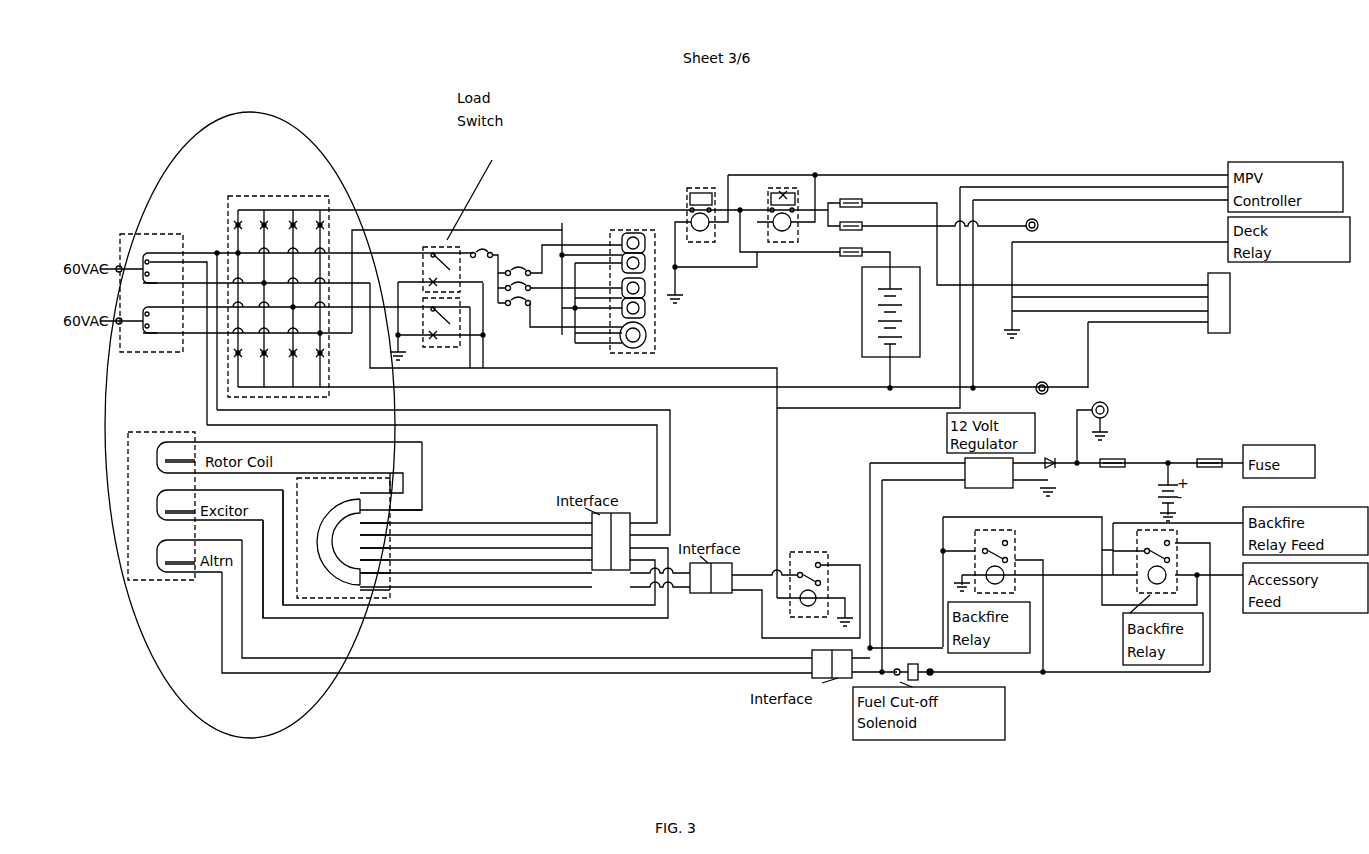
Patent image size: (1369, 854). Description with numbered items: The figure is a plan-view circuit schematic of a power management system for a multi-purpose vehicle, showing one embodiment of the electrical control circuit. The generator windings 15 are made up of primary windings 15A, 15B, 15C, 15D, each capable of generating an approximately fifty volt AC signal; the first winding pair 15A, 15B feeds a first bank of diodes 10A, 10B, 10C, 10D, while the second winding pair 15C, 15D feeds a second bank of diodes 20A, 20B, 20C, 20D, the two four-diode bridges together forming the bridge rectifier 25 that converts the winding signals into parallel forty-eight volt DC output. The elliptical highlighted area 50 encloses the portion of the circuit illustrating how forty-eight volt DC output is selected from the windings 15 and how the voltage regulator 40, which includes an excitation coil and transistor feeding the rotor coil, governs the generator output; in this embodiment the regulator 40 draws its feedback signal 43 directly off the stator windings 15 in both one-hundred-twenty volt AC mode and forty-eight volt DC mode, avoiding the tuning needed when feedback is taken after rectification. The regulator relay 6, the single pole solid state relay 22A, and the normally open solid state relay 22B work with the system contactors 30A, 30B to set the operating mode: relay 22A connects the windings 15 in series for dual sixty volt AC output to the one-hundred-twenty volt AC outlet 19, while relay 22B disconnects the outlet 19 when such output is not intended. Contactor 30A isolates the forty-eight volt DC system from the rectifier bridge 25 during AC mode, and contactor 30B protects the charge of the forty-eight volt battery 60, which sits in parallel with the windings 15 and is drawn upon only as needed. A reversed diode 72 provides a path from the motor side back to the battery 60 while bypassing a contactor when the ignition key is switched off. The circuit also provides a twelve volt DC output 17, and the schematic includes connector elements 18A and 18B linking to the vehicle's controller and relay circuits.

The highlighted area 50 is at (283, 118).
The bridge rectifier 25 is at (228, 197).
The diode 10A is at (238, 222).
The diode 10B is at (238, 353).
The diode 10C is at (264, 222).
The diode 10D is at (264, 353).
The diode 20A is at (296, 224).
The diode 20B is at (293, 355).
The diode 20C is at (322, 223).
The diode 20D is at (323, 355).
The generator windings 15 is at (120, 248).
The primary winding 15A is at (200, 251).
The primary winding 15B is at (180, 284).
The primary winding 15C is at (190, 309).
The primary winding 15D is at (172, 334).
The solid state relay 22A is at (436, 345).
The normally open solid state relay 22B is at (430, 280).
The 120 VAC outlet 19 is at (625, 230).
The 48 VDC system contactor 30A is at (697, 186).
The 48 VDC system contactor 30B is at (777, 186).
The reversed diode 72 is at (784, 196).
The battery 60 is at (860, 295).
The connector 18A is at (1233, 300).
The terminal 18B is at (1040, 225).
The 12 V DC output 17 is at (1108, 406).
The feedback signal 43 is at (689, 465).
The regulator relay 6 is at (815, 550).
The voltage regulator 40 is at (359, 538).